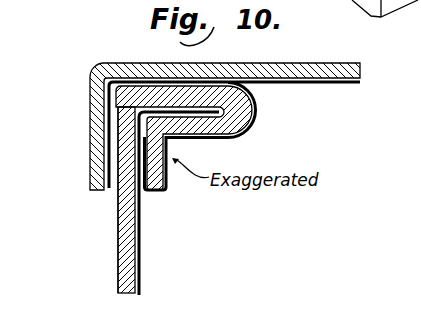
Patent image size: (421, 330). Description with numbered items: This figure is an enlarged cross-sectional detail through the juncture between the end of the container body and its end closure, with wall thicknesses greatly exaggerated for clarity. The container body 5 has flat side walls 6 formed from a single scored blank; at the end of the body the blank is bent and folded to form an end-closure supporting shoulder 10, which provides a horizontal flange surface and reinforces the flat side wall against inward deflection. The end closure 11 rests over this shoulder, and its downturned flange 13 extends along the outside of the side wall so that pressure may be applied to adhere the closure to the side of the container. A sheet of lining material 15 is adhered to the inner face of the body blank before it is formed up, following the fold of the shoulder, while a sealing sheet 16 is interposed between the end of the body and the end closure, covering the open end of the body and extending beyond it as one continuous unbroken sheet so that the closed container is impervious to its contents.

The body of a container 5 is at (112, 243).
The side walls 6 is at (115, 272).
The end-closure supporting shoulders 10 is at (236, 111).
The end closure 11 is at (302, 62).
The flange 13 is at (90, 138).
The lining material sheet 15 is at (145, 268).
The sealing sheet 16 is at (343, 88).